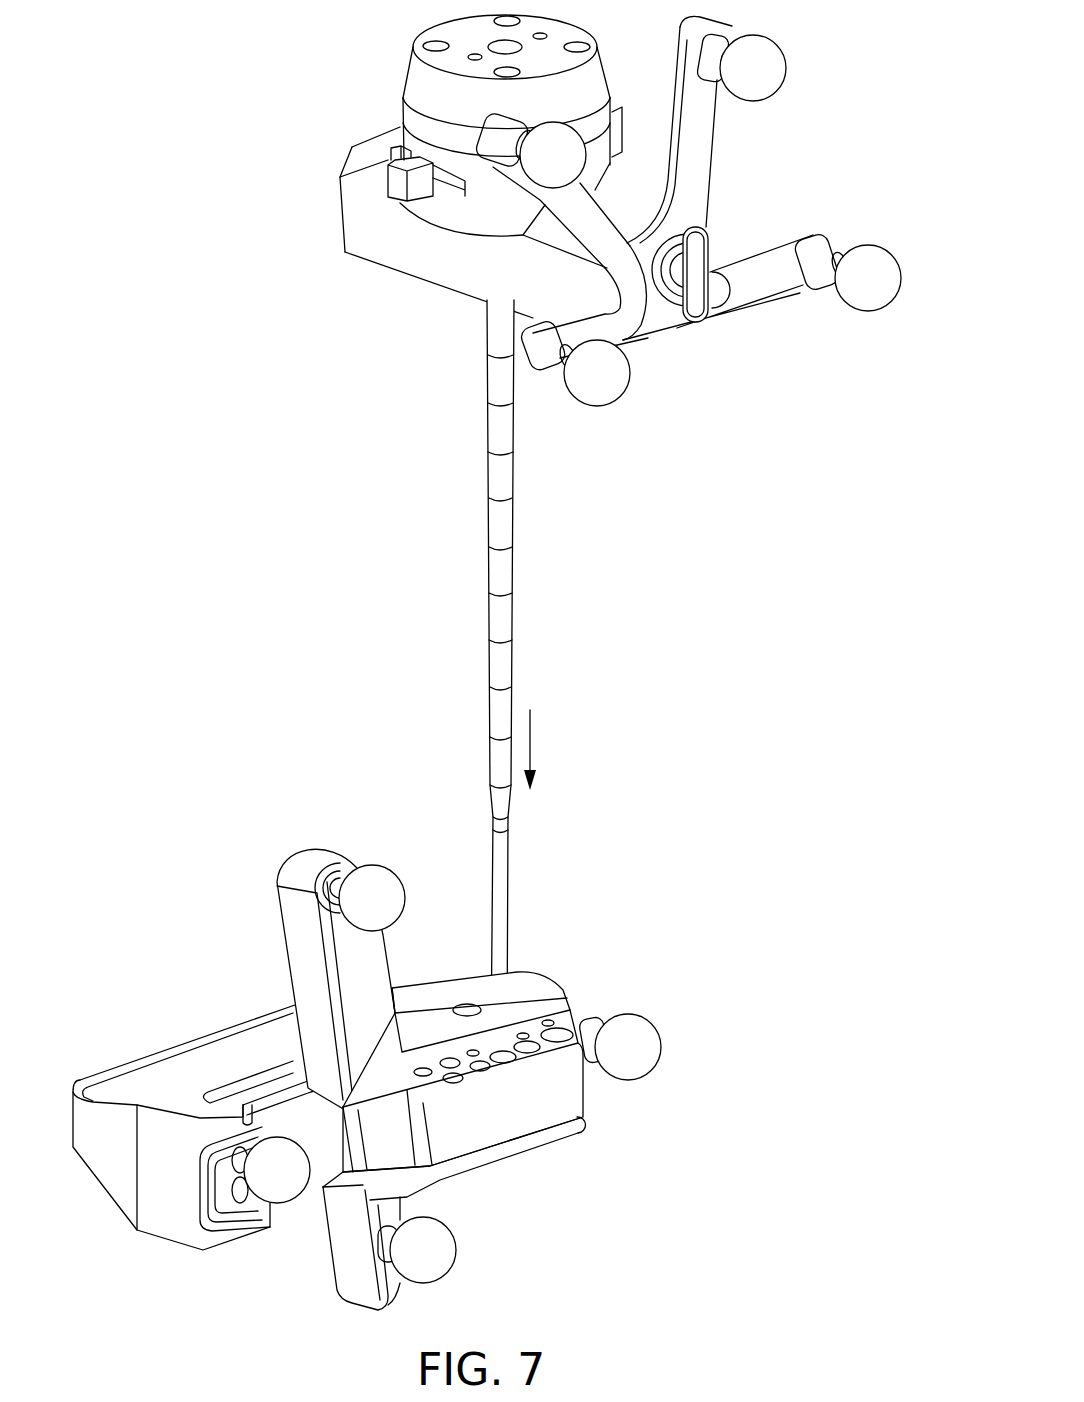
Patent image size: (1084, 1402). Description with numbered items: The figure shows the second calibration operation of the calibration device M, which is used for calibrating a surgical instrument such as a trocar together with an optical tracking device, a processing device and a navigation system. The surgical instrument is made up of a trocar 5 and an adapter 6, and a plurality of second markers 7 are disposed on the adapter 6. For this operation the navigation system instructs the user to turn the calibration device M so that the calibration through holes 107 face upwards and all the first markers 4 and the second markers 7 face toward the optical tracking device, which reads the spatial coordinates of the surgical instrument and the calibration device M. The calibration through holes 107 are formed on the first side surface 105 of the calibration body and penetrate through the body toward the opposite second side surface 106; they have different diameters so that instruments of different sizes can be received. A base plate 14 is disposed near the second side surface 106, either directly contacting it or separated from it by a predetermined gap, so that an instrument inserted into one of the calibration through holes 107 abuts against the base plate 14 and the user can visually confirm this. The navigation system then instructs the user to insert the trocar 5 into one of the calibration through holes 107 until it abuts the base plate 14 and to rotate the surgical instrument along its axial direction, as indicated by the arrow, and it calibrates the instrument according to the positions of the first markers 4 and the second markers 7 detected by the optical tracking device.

The first markers 4 is at (392, 900).
The trocar 5 is at (512, 664).
The adapter 6 is at (338, 206).
The second markers 7 is at (772, 66).
The base plate 14 is at (517, 1166).
The first side surface 105 is at (575, 1016).
The second side surface 106 is at (565, 1122).
The calibration through holes 107 is at (460, 1078).
The calibration device M is at (402, 1079).